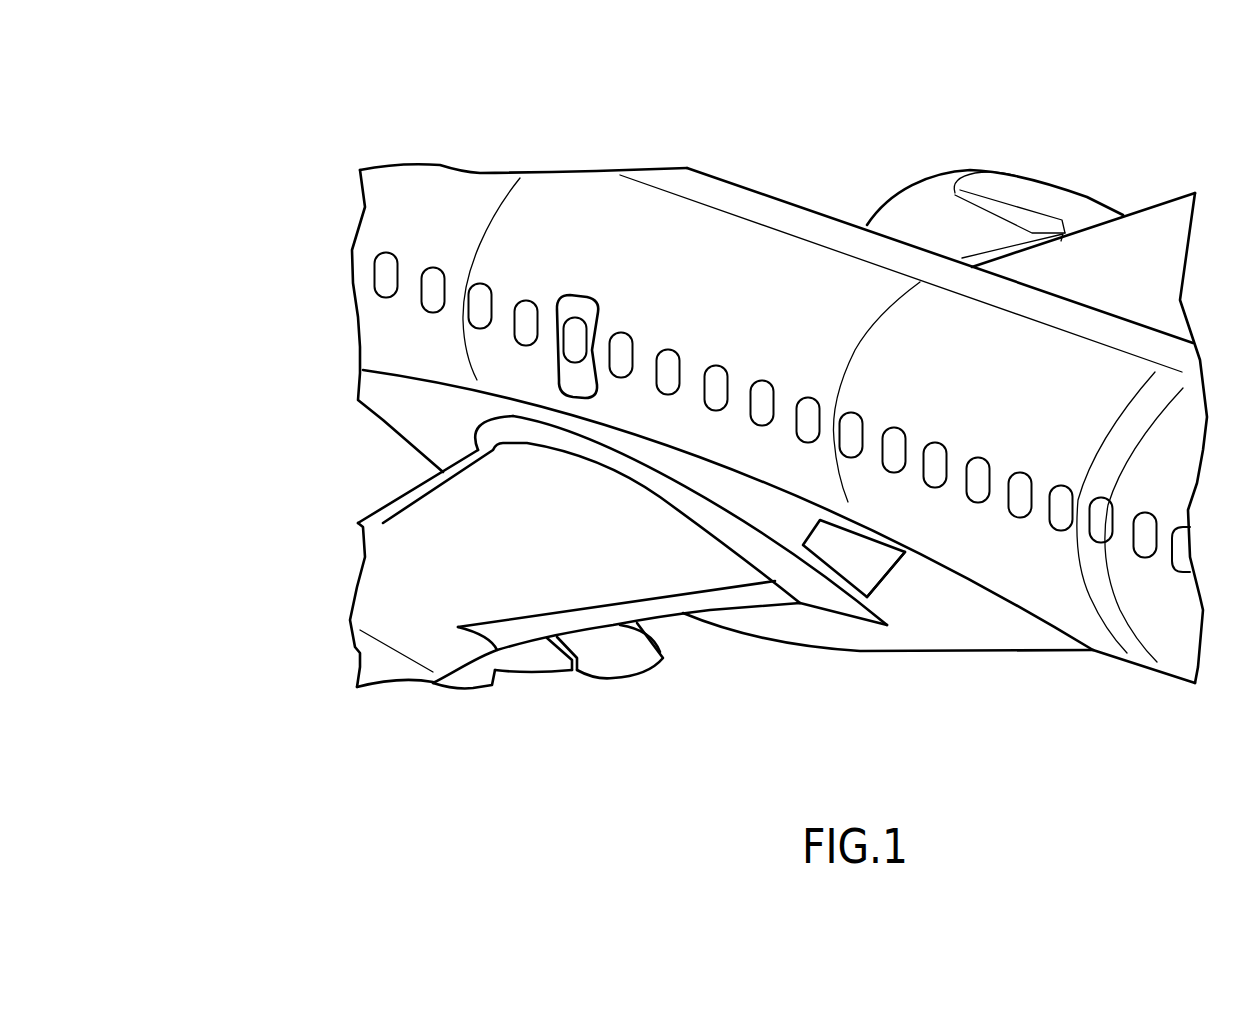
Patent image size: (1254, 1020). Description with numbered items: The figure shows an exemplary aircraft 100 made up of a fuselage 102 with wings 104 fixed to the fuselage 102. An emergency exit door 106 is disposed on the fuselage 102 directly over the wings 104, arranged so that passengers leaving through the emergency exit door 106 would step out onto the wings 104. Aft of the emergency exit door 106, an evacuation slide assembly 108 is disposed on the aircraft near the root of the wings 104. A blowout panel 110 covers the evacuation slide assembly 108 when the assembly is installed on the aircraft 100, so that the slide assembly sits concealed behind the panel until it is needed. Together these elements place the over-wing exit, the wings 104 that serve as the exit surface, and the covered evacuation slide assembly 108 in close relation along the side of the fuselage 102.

The aircraft 100 is at (275, 128).
The fuselage 102 is at (382, 340).
The wings 104 is at (615, 543).
The emergency exit door 106 is at (573, 293).
The evacuation slide assembly 108 is at (867, 563).
The blowout panel 110 is at (887, 572).